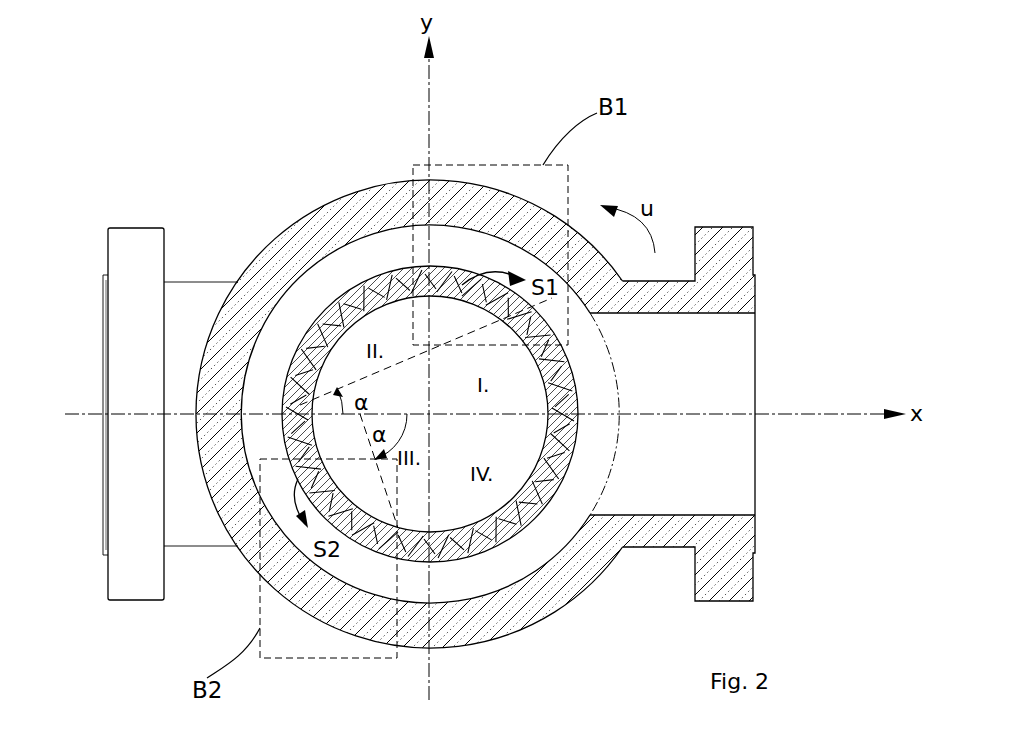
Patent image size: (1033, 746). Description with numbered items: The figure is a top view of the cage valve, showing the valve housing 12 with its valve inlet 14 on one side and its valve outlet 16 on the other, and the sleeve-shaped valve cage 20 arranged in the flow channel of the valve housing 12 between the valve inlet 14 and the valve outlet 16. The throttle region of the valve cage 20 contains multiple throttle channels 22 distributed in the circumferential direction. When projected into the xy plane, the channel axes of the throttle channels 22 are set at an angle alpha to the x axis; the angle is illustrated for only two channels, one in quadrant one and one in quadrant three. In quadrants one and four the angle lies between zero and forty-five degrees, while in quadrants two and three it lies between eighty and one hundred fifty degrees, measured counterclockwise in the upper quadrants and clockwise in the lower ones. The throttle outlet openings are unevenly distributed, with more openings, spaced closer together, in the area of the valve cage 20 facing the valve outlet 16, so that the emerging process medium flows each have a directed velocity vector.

The valve housing 12 is at (298, 230).
The valve inlet 14 is at (97, 470).
The valve outlet 16 is at (757, 366).
The valve cage 20 is at (286, 395).
The throttle channels 22 is at (457, 289).